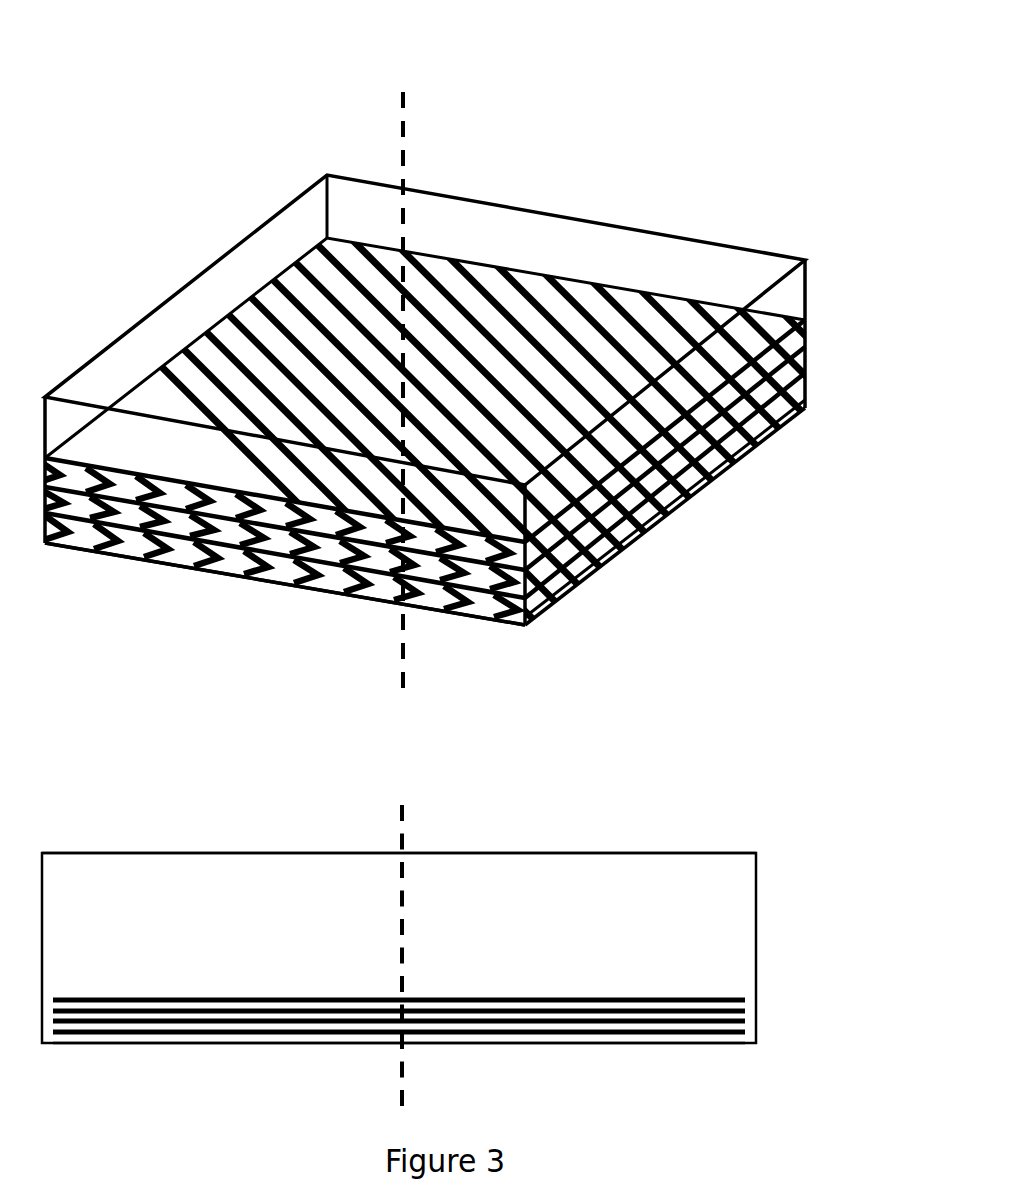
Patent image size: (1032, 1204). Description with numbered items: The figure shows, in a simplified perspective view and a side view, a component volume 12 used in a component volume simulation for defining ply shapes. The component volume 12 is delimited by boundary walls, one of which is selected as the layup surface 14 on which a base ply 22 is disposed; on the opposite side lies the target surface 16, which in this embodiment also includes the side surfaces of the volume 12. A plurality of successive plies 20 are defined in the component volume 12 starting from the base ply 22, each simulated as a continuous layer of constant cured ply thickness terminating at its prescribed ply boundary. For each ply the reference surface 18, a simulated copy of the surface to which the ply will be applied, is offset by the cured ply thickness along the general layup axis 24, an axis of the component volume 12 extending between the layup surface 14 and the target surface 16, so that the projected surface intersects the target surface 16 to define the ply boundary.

The component volume 12 is at (683, 238).
The layup surface 14 is at (258, 603).
The target surface 16 is at (537, 237).
The reference surface 18 is at (257, 353).
The plies 20 is at (813, 385).
The base ply 22 is at (655, 525).
The general layup axis 24 is at (405, 97).